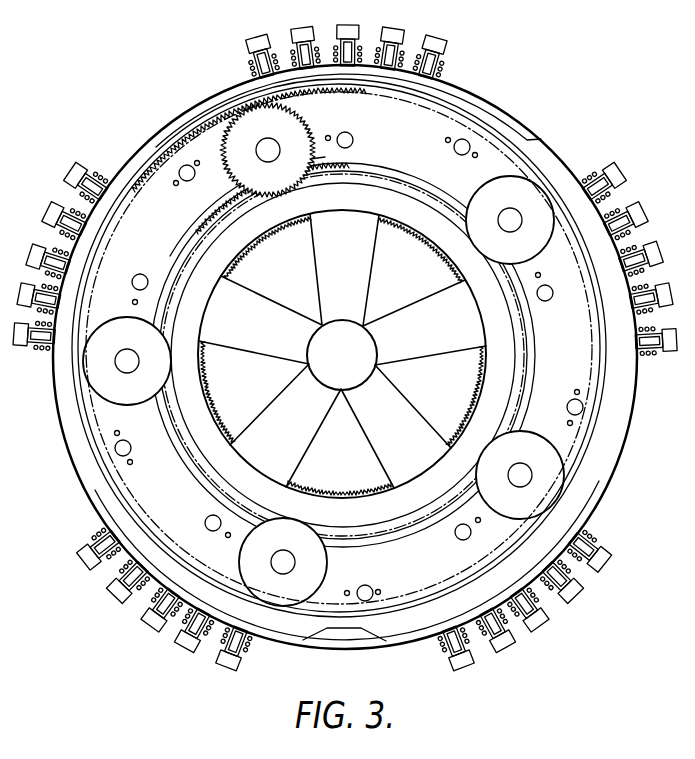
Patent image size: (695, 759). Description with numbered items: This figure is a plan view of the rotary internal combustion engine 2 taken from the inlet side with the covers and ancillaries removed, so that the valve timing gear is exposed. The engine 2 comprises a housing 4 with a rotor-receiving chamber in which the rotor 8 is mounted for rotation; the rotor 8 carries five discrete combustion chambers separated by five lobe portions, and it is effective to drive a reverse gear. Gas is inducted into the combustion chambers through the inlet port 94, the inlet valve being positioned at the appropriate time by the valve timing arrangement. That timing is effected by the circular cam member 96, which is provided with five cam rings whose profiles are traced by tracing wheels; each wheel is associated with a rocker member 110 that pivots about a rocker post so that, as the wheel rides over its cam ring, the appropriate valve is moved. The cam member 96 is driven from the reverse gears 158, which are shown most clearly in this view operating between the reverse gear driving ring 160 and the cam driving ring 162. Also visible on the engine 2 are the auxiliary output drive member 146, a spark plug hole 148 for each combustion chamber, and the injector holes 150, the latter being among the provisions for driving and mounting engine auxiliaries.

The rotary internal combustion engine 2 is at (660, 416).
The housing 4 is at (143, 475).
The rotor 8 is at (233, 235).
The inlet port 94 is at (115, 450).
The circular cam member 96 is at (77, 440).
The rocker member 110 is at (75, 203).
The auxiliary output drive member 146 is at (276, 160).
The spark plug hole 148 is at (210, 518).
The injector holes 150 is at (229, 538).
The reverse gears 158 is at (302, 112).
The reverse gear driving ring 160 is at (355, 152).
The cam driving ring 162 is at (193, 130).